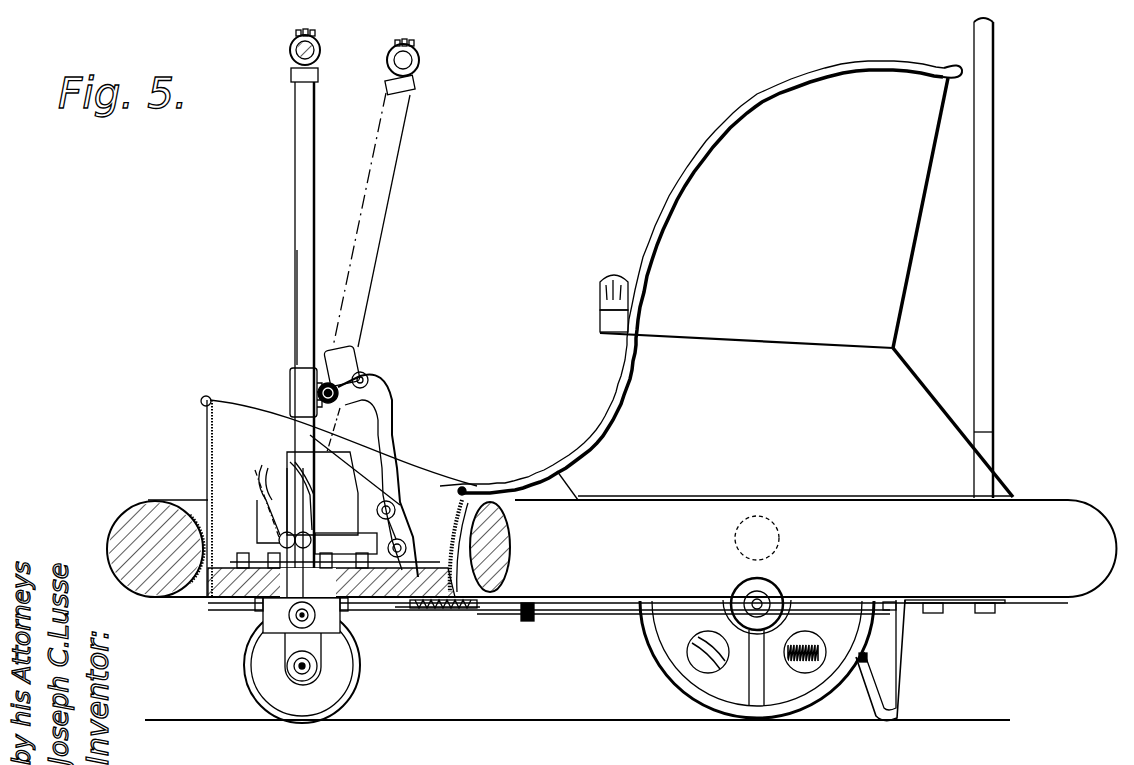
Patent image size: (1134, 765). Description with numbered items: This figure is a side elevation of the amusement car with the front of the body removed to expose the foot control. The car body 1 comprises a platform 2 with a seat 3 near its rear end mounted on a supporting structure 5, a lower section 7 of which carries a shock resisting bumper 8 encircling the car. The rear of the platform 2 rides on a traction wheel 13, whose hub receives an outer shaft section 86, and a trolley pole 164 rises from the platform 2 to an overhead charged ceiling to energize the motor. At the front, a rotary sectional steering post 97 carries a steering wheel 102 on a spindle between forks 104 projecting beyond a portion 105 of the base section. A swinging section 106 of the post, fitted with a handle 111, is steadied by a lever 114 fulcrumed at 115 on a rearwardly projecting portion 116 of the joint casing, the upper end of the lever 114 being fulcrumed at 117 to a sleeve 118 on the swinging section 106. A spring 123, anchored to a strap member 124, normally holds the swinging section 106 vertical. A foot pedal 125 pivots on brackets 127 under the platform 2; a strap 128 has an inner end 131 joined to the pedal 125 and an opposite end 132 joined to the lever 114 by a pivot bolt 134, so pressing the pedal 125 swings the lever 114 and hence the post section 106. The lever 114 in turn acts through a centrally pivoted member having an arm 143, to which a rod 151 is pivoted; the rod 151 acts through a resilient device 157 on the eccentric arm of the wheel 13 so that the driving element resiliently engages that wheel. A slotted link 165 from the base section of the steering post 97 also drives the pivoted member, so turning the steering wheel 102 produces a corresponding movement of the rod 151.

The car body 1 is at (701, 280).
The platform 2 is at (432, 608).
The seat 3 is at (615, 280).
The supporting structure 5 is at (906, 352).
The lower section of the structure 7 is at (1011, 494).
The shock resisting bumper 8 is at (1085, 503).
The traction wheel 13 is at (655, 670).
The outer shaft section 86 is at (757, 600).
The rotary sectional steering post 97 is at (312, 208).
The steering wheel 102 is at (360, 669).
The forks 104 is at (292, 640).
The portion of the base section 105 is at (314, 672).
The swinging section 106 is at (296, 318).
The handle 111 is at (320, 58).
The lever 114 is at (392, 466).
The fulcrum 115 is at (395, 512).
The rearwardly projecting portion of the casing 116 is at (330, 493).
The fulcrum 117 is at (352, 370).
The sleeve 118 is at (292, 370).
The spring 123 is at (475, 590).
The strap member 124 is at (452, 612).
The pedal 125 is at (272, 470).
The brackets 127 is at (345, 624).
The strap 128 is at (346, 543).
The inner ends of the straps 131 is at (312, 535).
The opposite end of the strap 132 is at (400, 538).
The pivot bolt 134 is at (407, 549).
The arm 143 is at (527, 620).
The rod 151 is at (606, 614).
The resilient device 157 is at (805, 645).
The trolley pole 164 is at (990, 232).
The link 165 is at (448, 612).